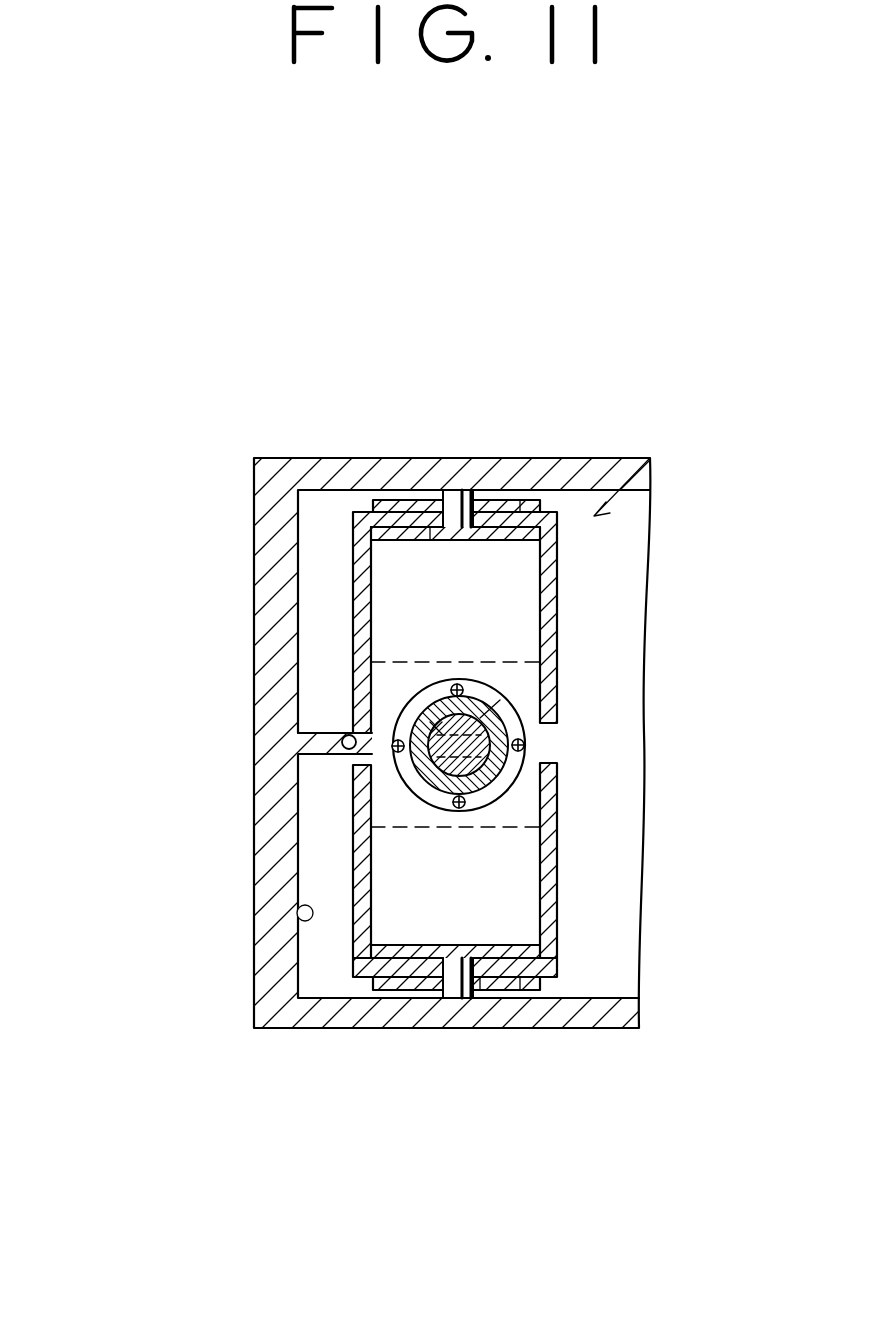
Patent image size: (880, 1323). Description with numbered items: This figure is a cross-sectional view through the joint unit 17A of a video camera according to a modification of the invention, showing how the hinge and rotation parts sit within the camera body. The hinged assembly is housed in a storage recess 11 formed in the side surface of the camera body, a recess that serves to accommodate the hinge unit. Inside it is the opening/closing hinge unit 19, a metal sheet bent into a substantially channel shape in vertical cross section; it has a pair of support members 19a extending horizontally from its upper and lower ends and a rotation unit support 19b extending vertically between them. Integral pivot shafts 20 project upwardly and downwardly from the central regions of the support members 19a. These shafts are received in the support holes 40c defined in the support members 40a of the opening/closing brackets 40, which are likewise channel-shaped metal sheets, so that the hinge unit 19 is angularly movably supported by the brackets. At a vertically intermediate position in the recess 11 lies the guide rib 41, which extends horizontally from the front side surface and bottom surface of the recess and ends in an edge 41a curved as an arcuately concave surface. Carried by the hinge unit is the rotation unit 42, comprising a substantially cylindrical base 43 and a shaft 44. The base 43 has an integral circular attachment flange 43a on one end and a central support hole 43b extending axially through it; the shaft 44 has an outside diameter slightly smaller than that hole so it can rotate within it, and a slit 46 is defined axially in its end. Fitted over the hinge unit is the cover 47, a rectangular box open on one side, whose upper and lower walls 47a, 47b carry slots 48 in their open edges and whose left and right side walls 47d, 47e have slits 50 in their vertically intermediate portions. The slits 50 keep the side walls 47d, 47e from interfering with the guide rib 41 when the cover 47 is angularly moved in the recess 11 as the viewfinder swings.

The storage recess 11 is at (298, 918).
The joint unit 17A is at (650, 458).
The opening/closing hinge unit 19 is at (462, 754).
The support members 19a is at (372, 536).
The rotation unit support 19b is at (558, 893).
The pivot shafts 20 is at (461, 495).
The opening/closing brackets 40 is at (391, 743).
The support members 40a is at (533, 500).
The support holes 40c is at (440, 542).
The guide rib 41 is at (256, 740).
The edge 41a is at (345, 736).
The rotation unit 42 is at (525, 705).
The base 43 is at (584, 746).
The attachment flange 43a is at (500, 700).
The support hole 43b is at (436, 785).
The shaft 44 is at (488, 680).
The slit 46 is at (428, 700).
The cover 47 is at (467, 743).
The upper wall 47a is at (414, 514).
The lower wall 47b is at (395, 978).
The side wall 47d is at (558, 838).
The side wall 47e is at (357, 842).
The slots 48 is at (474, 500).
The slits 50 is at (392, 750).